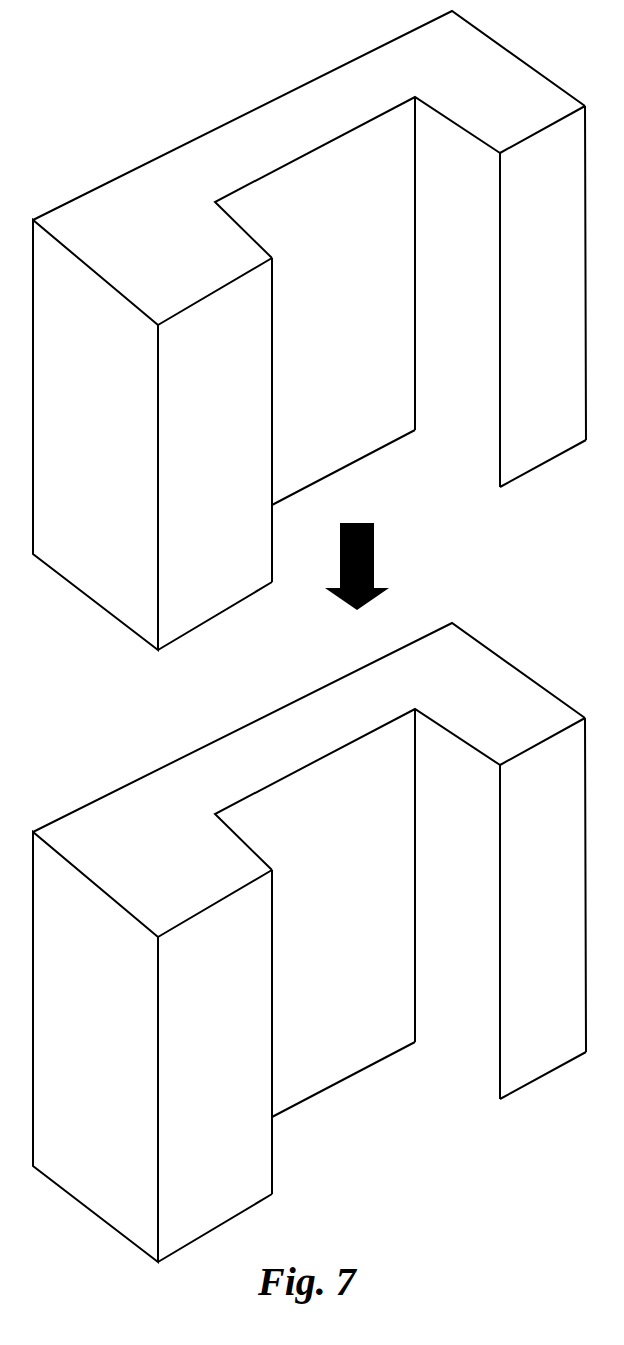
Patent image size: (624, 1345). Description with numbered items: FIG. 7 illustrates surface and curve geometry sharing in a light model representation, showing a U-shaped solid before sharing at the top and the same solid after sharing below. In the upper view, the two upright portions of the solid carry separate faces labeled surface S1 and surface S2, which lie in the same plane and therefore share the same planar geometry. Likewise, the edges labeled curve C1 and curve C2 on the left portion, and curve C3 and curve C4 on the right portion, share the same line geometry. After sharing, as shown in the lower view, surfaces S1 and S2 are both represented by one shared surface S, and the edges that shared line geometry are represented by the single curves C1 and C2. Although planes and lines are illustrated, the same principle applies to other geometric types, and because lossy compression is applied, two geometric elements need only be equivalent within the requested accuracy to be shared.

The curve C1 is at (371, 595).
The curve C2 is at (372, 923).
The curve C3 is at (542, 126).
The curve C4 is at (543, 472).
The surface S1 is at (237, 420).
The surface S2 is at (543, 296).
The shared surface S is at (395, 956).